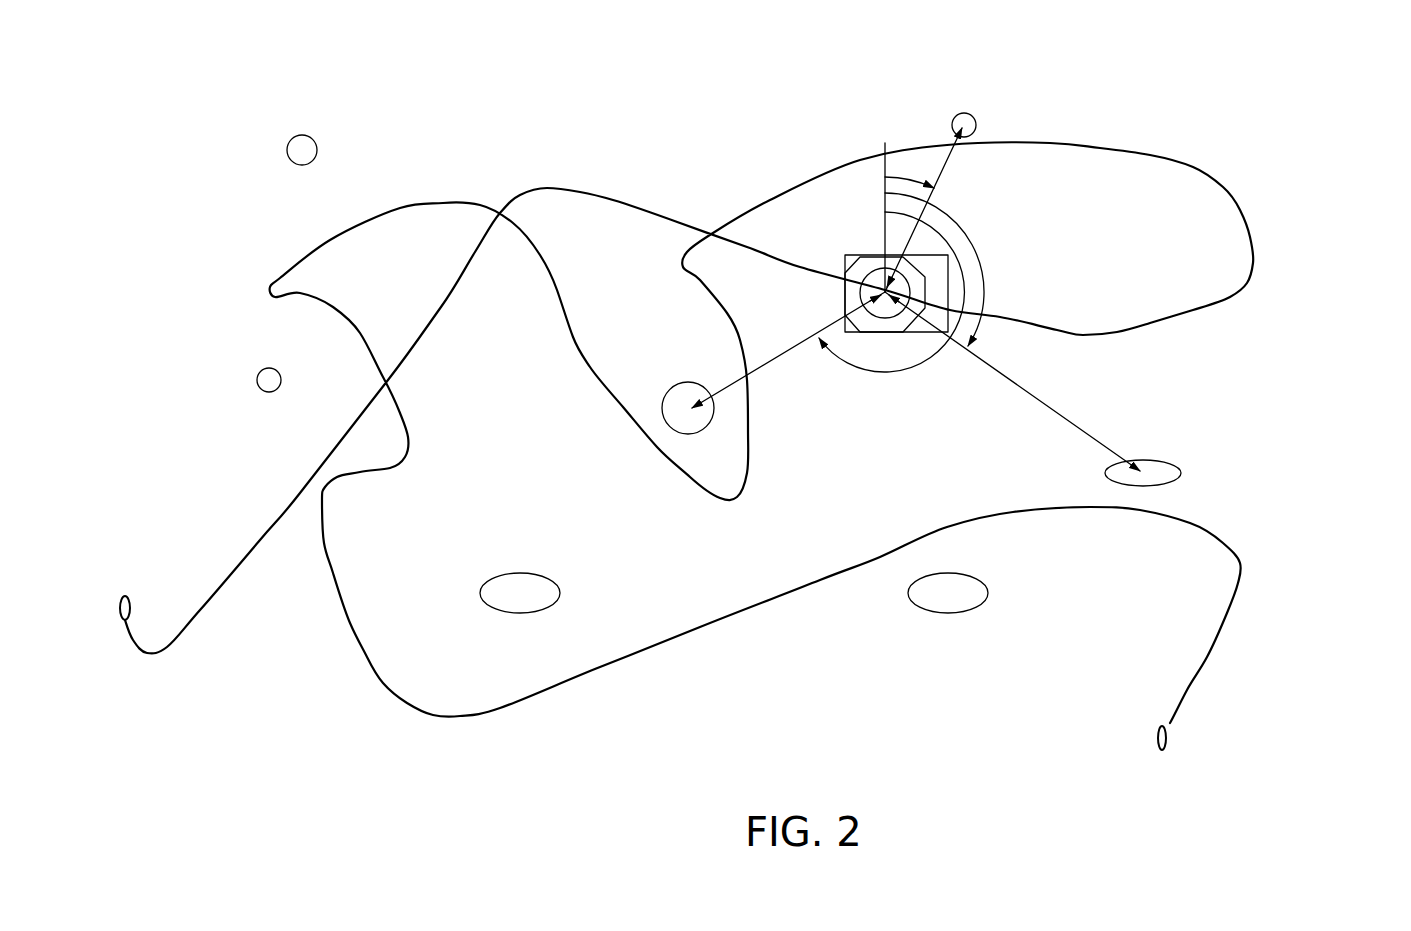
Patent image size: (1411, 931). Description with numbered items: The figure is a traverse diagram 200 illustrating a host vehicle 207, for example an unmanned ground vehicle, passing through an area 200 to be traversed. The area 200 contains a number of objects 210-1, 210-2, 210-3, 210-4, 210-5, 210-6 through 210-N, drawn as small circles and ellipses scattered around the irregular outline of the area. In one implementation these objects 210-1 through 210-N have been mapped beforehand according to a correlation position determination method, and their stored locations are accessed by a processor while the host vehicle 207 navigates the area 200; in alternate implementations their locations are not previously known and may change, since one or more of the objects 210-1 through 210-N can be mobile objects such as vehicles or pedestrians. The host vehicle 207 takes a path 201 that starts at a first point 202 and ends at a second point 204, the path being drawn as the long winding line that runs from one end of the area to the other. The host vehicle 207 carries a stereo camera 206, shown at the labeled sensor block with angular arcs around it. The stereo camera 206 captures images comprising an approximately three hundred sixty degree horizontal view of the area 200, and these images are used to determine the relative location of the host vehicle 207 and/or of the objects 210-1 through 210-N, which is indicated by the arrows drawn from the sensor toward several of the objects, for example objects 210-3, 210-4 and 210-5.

The traverse diagram / area to be traversed 200 is at (1329, 150).
The path 201 is at (383, 218).
The first point 202 is at (124, 596).
The second point 204 is at (1156, 740).
The stereo camera 206 is at (877, 270).
The host vehicle 207 is at (943, 273).
The object 210-1 is at (269, 368).
The object 210-2 is at (300, 135).
The object 210-3 is at (688, 383).
The object 210-4 is at (960, 113).
The object 210-5 is at (1180, 472).
The object 210-6 is at (985, 590).
The object 210-N is at (520, 573).